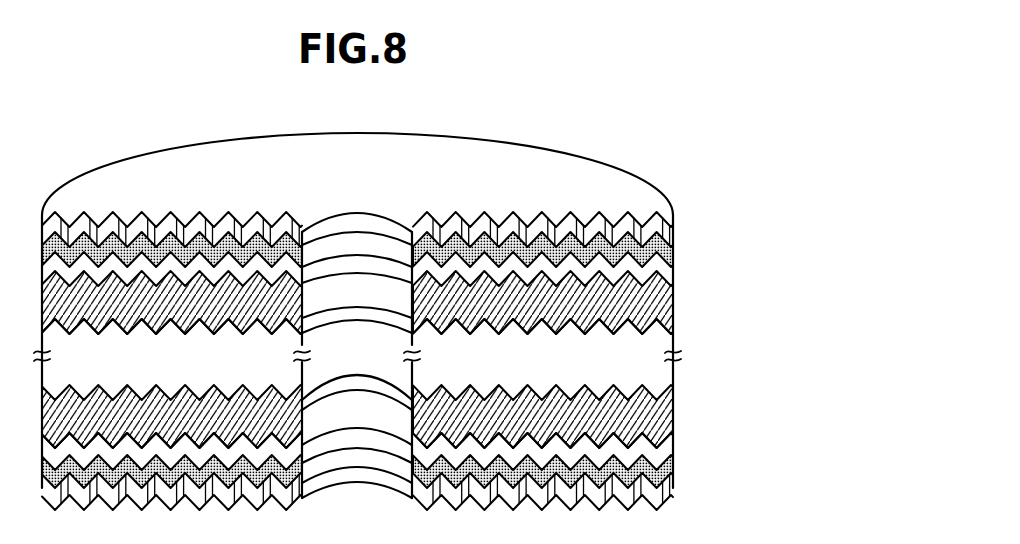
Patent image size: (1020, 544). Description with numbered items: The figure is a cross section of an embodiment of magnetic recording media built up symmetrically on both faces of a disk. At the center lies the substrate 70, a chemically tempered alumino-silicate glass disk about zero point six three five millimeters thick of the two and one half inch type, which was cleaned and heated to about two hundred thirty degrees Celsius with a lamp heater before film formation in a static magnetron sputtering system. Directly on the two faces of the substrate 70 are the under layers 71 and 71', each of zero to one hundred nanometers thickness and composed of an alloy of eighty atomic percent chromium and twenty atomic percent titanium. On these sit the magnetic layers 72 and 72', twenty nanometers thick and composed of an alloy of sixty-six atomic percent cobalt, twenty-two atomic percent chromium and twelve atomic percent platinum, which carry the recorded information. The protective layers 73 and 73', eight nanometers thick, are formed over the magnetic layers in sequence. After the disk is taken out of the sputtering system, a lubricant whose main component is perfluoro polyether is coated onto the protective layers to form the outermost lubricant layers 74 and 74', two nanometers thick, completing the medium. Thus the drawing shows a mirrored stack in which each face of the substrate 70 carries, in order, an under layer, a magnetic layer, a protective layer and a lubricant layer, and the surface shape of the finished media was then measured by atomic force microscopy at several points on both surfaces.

The substrate 70 is at (676, 357).
The under layer 71 is at (385, 320).
The magnetic layer 72 is at (385, 302).
The protective layer 73 is at (385, 252).
The lubricant layer 74 is at (385, 229).
The under layer 71' is at (388, 411).
The magnetic layer 72' is at (388, 445).
The protective layer 73' is at (388, 468).
The lubricant layer 74' is at (388, 488).